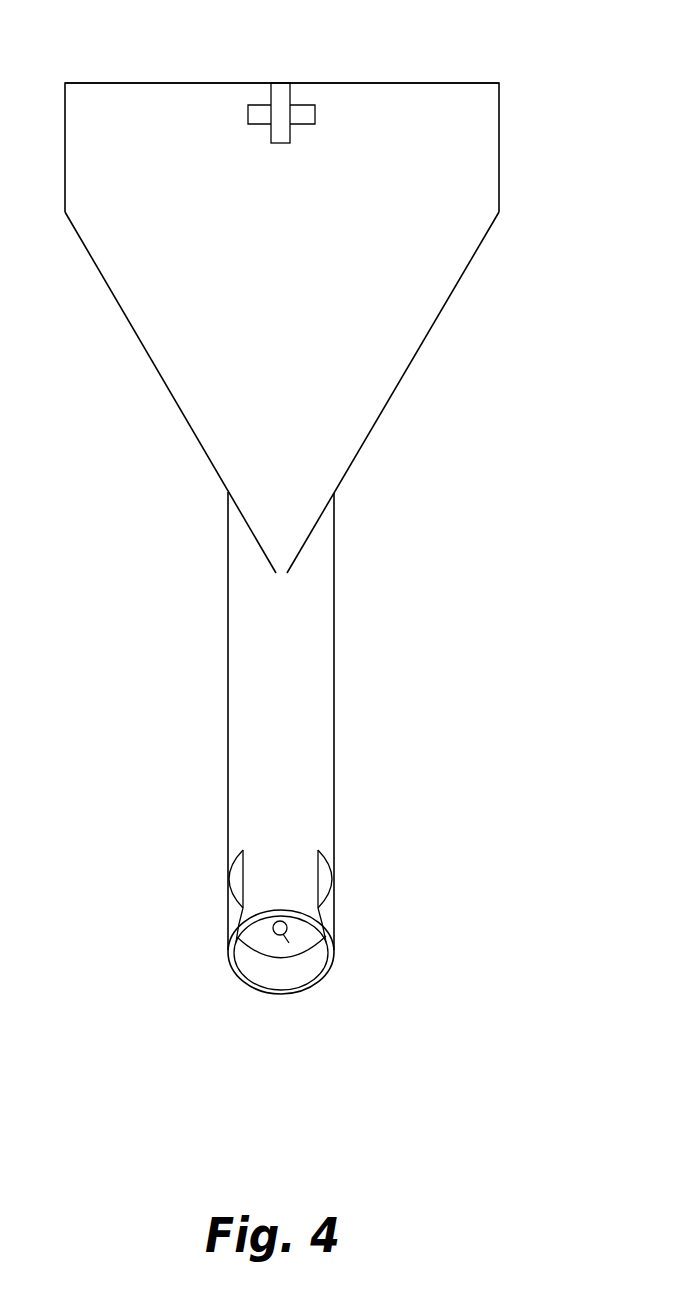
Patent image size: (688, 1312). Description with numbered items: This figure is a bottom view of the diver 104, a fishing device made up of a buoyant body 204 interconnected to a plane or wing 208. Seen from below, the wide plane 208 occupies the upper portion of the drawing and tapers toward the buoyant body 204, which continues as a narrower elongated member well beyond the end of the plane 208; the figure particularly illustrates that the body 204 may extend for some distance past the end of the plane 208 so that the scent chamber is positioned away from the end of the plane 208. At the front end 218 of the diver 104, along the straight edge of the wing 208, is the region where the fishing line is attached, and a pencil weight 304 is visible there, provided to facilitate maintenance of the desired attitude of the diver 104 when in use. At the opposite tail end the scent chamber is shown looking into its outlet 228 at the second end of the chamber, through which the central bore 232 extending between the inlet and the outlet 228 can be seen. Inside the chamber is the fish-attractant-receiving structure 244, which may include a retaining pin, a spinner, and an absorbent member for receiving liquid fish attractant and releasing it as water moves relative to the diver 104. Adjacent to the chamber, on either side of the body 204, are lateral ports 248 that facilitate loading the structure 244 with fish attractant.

The diver 104 is at (305, 560).
The buoyant body 204 is at (228, 738).
The plane or wing 208 is at (395, 335).
The front end 218 is at (232, 82).
The outlet 228 is at (313, 963).
The central bore 232 is at (255, 965).
The fish-attractant-receiving structure 244 is at (289, 943).
The lateral ports 248 is at (245, 880).
The pencil weight 304 is at (317, 113).